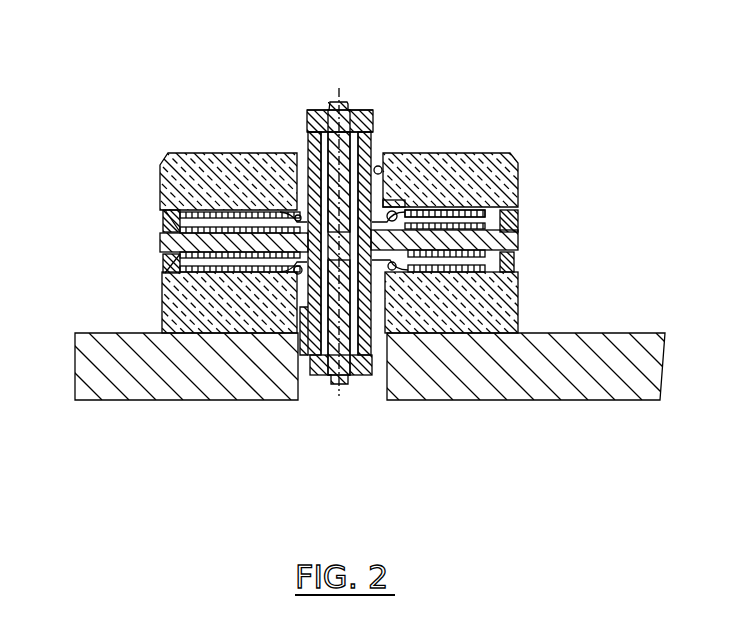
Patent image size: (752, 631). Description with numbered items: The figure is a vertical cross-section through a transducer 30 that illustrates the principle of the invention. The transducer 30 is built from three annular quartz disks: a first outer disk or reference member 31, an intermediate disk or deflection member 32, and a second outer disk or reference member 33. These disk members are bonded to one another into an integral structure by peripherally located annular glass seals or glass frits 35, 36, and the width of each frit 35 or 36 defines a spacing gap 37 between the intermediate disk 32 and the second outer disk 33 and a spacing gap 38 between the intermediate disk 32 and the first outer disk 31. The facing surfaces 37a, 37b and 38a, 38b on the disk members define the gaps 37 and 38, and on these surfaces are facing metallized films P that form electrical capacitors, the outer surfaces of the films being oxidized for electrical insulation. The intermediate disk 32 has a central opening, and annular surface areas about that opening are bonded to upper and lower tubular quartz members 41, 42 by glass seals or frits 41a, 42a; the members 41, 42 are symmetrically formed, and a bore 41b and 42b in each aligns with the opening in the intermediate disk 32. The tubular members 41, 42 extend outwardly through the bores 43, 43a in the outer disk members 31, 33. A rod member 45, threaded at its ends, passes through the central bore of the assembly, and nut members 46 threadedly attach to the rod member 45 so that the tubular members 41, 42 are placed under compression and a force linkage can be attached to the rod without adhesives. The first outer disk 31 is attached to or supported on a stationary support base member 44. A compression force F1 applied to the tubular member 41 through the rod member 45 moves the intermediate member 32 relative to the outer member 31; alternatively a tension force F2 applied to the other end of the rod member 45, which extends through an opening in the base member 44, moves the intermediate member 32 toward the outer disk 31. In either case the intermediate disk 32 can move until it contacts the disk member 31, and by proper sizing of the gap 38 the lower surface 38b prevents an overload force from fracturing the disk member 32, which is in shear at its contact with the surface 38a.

The transducer 30 is at (540, 215).
The first outer disk or reference member 31 is at (520, 297).
The intermediate disk or deflection member 32 is at (520, 241).
The second outer disk or reference member 33 is at (520, 197).
The glass seal or glass frit 35 is at (165, 222).
The glass seal or glass frit 36 is at (165, 265).
The spacing gap 37 is at (470, 216).
The facing surface 37a is at (415, 208).
The facing surface 37b is at (382, 228).
The spacing gap 38 is at (405, 204).
The facing surface 38a is at (297, 270).
The lower surface 38b is at (290, 262).
The upper tubular quartz member 41 is at (374, 134).
The glass seal or frit 41a is at (306, 219).
The bore 41b is at (373, 111).
The lower tubular quartz member 42 is at (370, 298).
The glass seal or frit 42a is at (258, 205).
The bore 42b is at (349, 364).
The bore 43 is at (372, 158).
The bore 43a is at (303, 362).
The stationary support base member 44 is at (604, 338).
The rod member 45 is at (346, 375).
The nut member 46 is at (308, 111).
The metallized film P is at (163, 207).
The compression force F1 is at (339, 76).
The tension force F2 is at (339, 396).